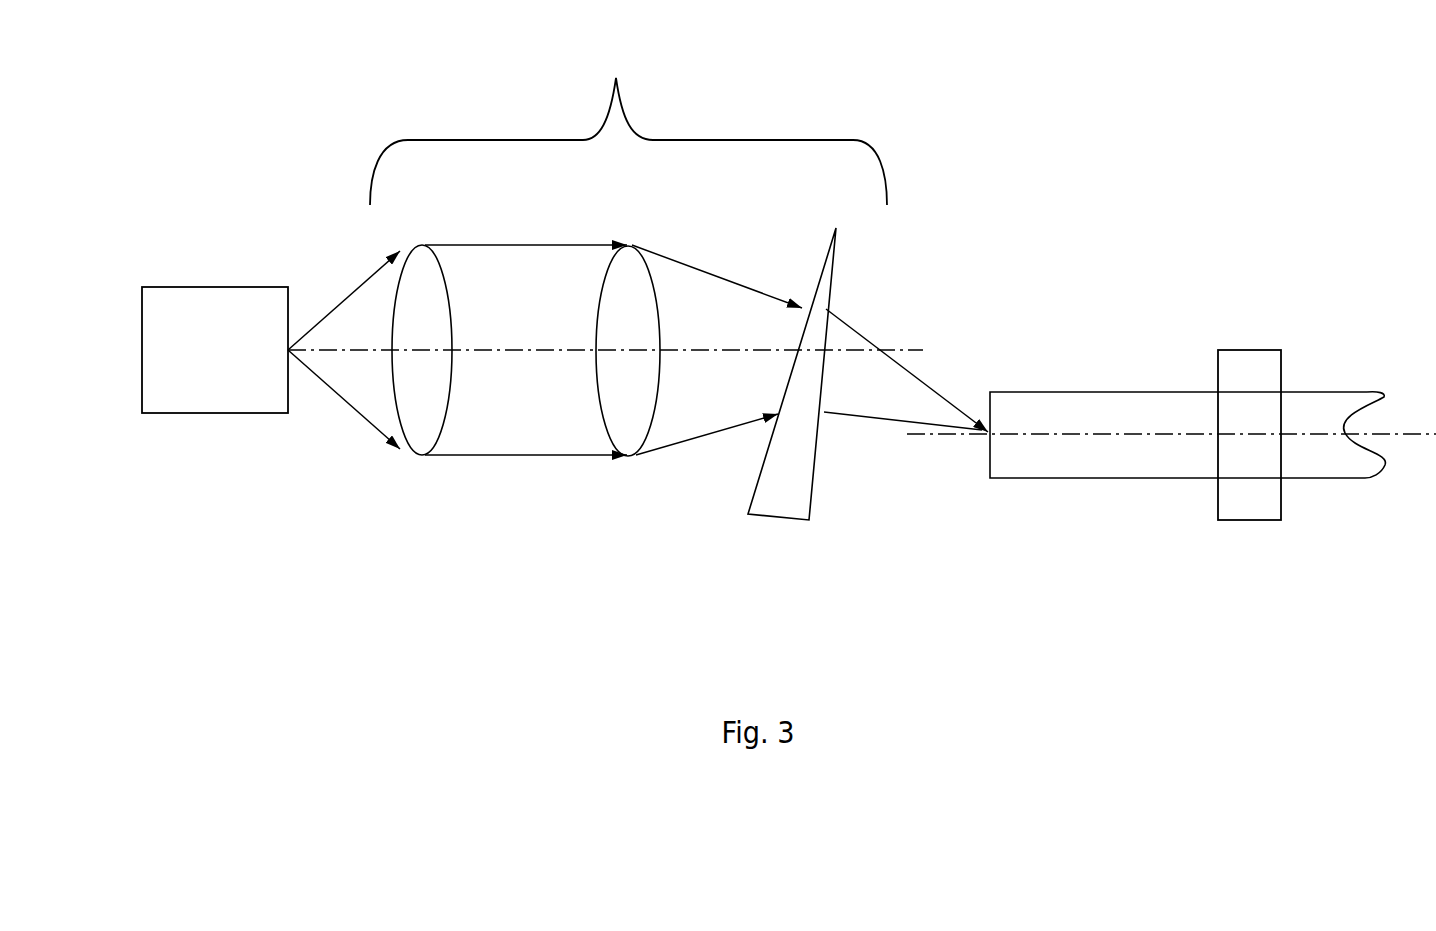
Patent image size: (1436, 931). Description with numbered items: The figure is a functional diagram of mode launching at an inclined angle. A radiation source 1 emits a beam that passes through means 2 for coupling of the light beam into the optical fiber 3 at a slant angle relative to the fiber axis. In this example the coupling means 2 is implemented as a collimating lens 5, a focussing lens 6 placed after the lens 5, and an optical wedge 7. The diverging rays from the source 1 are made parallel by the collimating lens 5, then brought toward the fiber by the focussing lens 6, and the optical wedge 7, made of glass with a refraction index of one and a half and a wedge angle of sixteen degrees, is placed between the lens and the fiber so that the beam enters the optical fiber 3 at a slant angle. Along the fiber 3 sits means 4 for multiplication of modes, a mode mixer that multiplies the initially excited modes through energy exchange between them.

The radiation source 1 is at (190, 287).
The means for coupling of the light beam into the optical fiber at a slant angle 2 is at (617, 95).
The optical fiber 3 is at (1067, 392).
The means for multiplication of modes 4 is at (1253, 520).
The collimating lens 5 is at (423, 453).
The focussing lens 6 is at (625, 460).
The optical wedge 7 is at (785, 518).